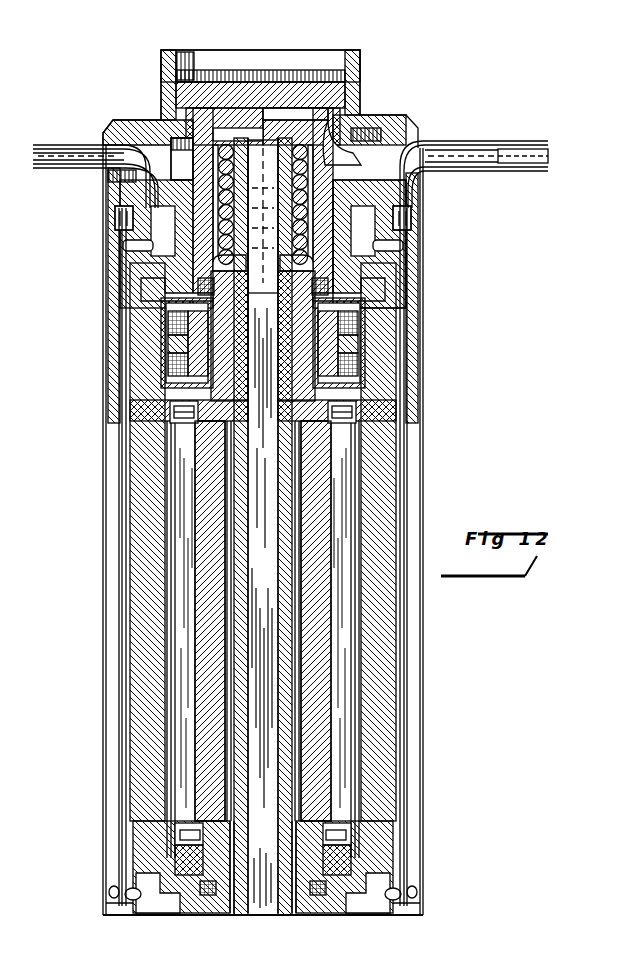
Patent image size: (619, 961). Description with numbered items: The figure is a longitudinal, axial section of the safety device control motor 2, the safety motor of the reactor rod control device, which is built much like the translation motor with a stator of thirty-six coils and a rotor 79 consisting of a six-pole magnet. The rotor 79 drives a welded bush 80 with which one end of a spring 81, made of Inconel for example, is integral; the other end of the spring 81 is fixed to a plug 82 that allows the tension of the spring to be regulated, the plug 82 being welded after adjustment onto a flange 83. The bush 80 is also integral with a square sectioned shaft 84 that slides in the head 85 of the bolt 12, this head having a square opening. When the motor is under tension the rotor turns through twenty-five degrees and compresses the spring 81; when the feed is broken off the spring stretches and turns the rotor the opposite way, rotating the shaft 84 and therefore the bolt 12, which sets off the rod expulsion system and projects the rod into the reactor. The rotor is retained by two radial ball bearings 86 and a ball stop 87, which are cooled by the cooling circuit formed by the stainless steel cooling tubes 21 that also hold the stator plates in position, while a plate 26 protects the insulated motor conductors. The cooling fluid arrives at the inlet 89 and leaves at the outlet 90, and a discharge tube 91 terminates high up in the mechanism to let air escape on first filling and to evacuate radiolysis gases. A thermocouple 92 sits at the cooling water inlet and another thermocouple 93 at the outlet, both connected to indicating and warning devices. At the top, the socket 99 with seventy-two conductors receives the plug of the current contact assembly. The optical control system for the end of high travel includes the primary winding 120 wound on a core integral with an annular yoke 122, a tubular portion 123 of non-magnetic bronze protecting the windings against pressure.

The safety device control motor 2 is at (138, 490).
The bolt 12 is at (289, 752).
The cooling tubes 21 is at (112, 270).
The plate 26 is at (96, 770).
The rotor 79 is at (196, 730).
The welded bush 80 is at (359, 244).
The spring 81 is at (212, 232).
The plug 82 is at (273, 106).
The flange 83 is at (165, 128).
The square sectioned shaft 84 is at (266, 697).
The head 85 is at (272, 330).
The radial ball bearings 86 is at (195, 278).
The ball stop 87 is at (172, 850).
The cooling fluid inlet 89 is at (460, 133).
The cooling fluid outlet 90 is at (50, 137).
The discharge tube 91 is at (522, 158).
The thermocouple 92 is at (392, 203).
The thermocouple 93 is at (108, 208).
The socket 99 is at (203, 56).
The primary winding 120 is at (158, 318).
The yoke 122 is at (352, 322).
The tubular portion 123 is at (352, 358).